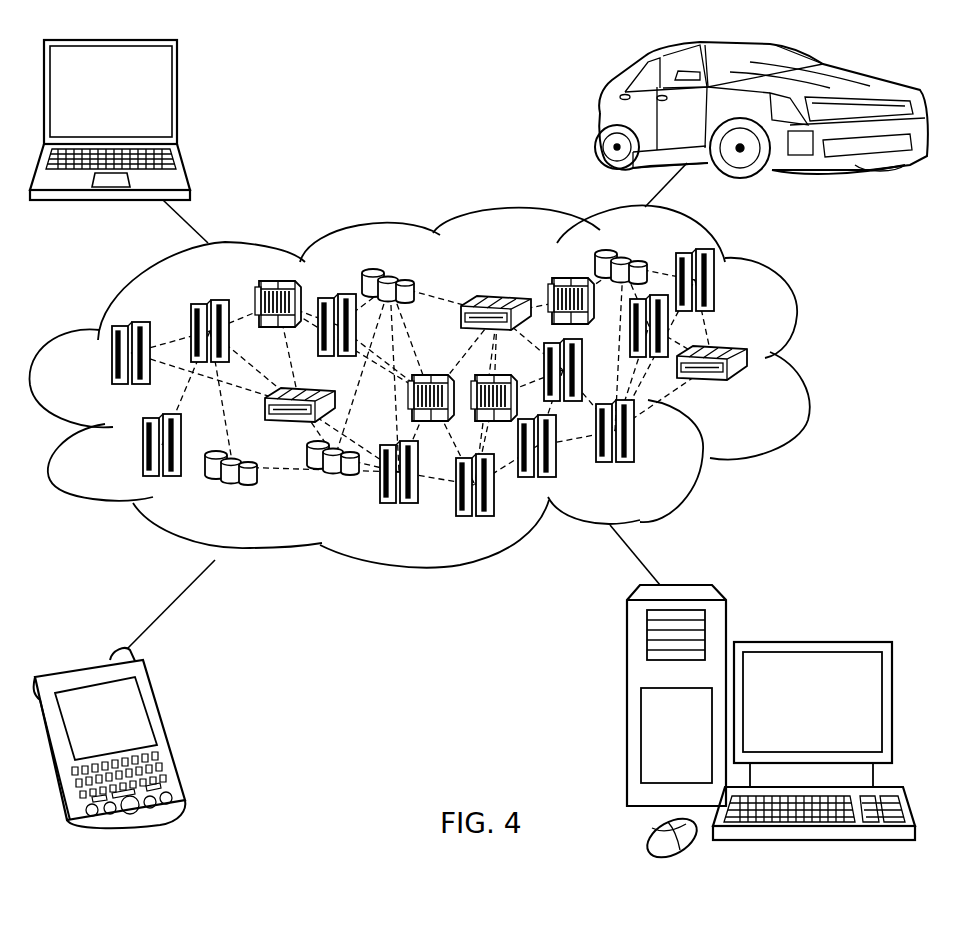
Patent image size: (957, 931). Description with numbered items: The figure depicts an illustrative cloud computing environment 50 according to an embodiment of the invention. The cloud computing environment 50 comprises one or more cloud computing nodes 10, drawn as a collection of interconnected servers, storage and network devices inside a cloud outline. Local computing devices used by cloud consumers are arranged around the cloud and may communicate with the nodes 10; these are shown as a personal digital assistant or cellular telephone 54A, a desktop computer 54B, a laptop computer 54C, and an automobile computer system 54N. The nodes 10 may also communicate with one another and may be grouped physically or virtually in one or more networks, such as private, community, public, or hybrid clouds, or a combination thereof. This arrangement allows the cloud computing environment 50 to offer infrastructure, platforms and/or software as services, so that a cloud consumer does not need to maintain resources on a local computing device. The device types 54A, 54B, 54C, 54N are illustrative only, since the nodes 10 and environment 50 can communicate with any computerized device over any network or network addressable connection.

The cloud computing nodes 10 is at (762, 396).
The cloud computing environment 50 is at (812, 364).
The personal digital assistant or cellular telephone 54A is at (166, 732).
The desktop computer 54B is at (808, 640).
The laptop computer 54C is at (177, 97).
The automobile computer system 54N is at (598, 110).